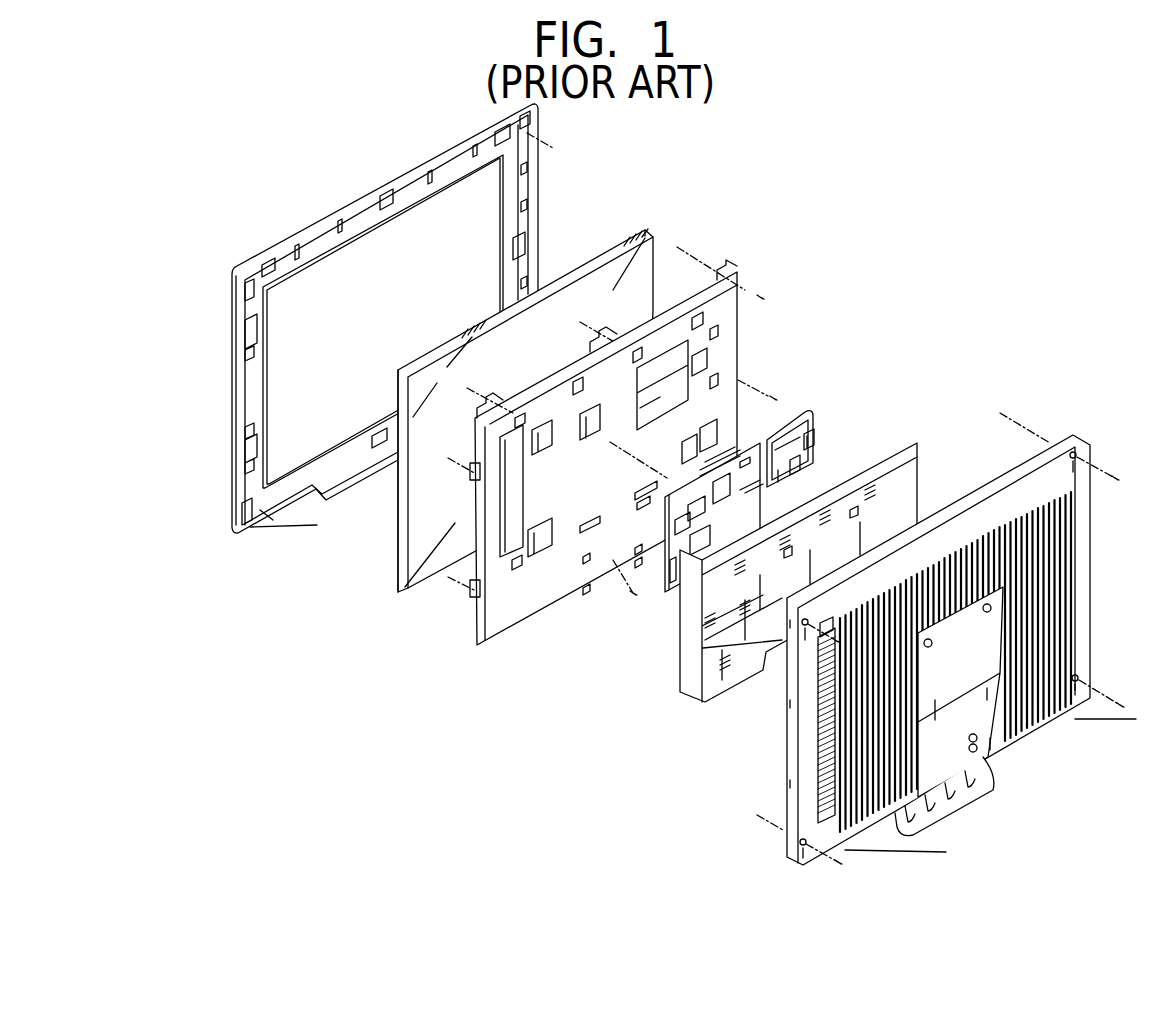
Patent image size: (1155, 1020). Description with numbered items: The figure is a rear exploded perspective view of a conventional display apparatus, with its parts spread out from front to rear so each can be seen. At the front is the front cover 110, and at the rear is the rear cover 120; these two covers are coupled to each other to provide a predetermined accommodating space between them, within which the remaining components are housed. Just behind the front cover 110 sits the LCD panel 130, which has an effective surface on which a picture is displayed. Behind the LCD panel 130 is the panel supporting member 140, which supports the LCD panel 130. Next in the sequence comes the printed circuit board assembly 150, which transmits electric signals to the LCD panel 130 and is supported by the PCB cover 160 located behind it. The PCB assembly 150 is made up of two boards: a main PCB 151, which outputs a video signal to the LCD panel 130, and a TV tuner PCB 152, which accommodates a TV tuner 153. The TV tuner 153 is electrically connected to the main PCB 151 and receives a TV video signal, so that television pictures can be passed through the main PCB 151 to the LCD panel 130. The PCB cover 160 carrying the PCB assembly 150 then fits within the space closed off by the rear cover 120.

The front cover 110 is at (537, 182).
The rear cover 120 is at (995, 481).
The LCD panel 130 is at (649, 231).
The panel supporting member 140 is at (726, 268).
The printed circuit board assembly 150 is at (855, 347).
The main PCB 151 is at (748, 447).
The TV tuner PCB 152 is at (812, 418).
The TV tuner 153 is at (813, 438).
The PCB cover 160 is at (913, 437).